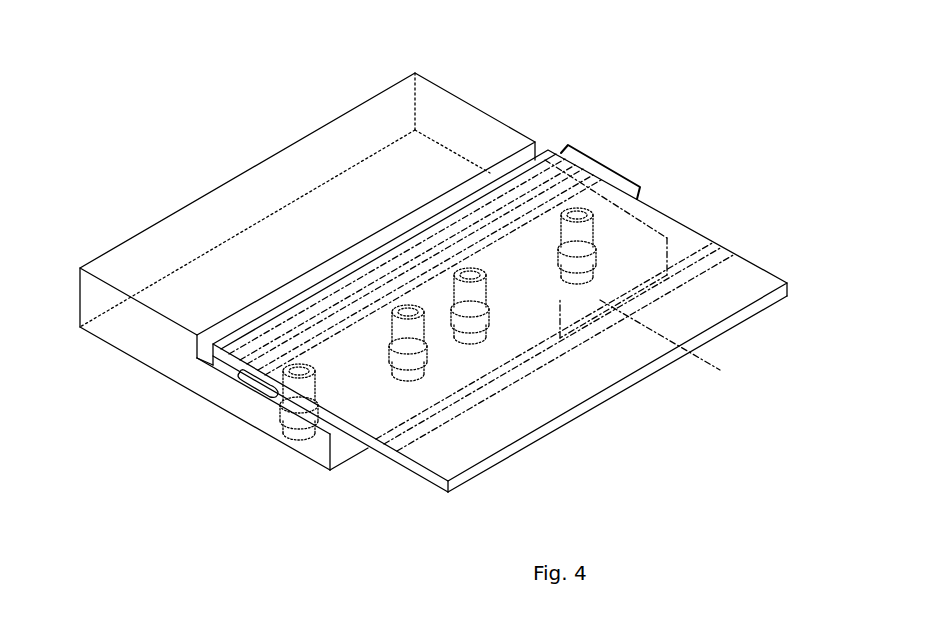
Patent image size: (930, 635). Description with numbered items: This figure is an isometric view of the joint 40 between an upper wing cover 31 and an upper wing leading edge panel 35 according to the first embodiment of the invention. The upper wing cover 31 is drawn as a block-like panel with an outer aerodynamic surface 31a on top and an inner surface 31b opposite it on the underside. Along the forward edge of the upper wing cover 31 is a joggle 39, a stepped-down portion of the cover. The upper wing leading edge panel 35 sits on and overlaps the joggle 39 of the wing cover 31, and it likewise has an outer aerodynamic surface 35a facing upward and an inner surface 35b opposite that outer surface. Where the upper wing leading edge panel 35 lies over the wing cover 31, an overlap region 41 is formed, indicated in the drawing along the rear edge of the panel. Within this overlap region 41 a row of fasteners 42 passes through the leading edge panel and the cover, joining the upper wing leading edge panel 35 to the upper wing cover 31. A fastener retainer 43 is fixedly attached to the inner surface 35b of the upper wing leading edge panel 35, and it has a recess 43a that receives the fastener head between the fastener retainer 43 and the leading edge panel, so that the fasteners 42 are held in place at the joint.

The joint 40 is at (433, 292).
The upper wing cover 31 is at (307, 300).
The outer aerodynamic surface 31a is at (303, 245).
The inner surface 31b is at (167, 383).
The joggle 39 is at (243, 410).
The fastener retainer 43 is at (225, 370).
The recess 43a is at (272, 395).
The upper wing leading edge panel 35 is at (500, 342).
The outer aerodynamic surface 35a is at (507, 425).
The inner surface 35b is at (394, 476).
The overlap region 41 is at (609, 166).
The fasteners 42 is at (310, 392).